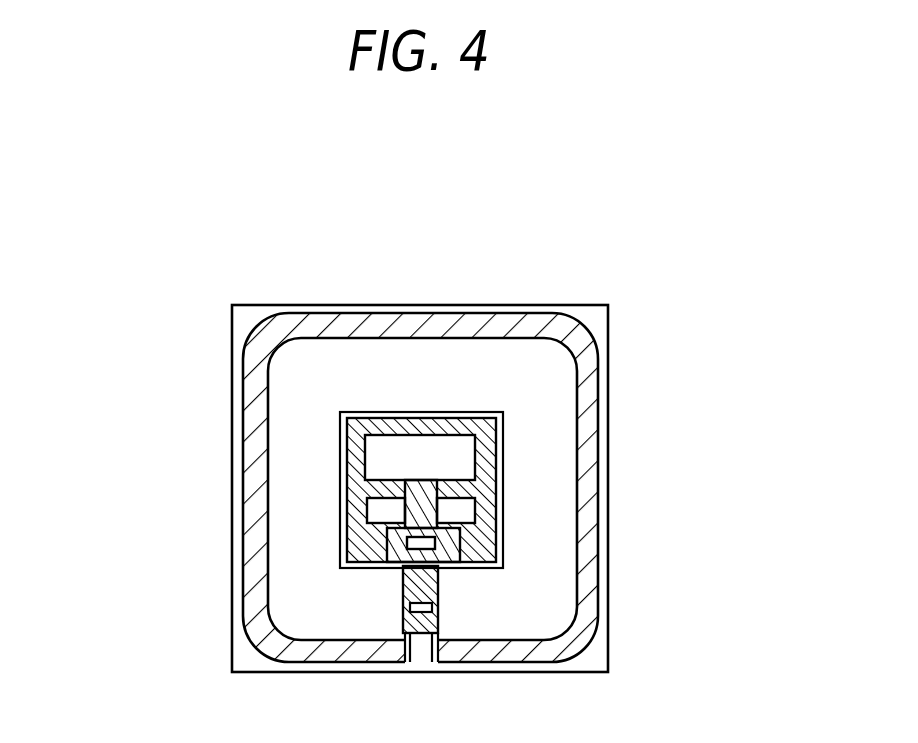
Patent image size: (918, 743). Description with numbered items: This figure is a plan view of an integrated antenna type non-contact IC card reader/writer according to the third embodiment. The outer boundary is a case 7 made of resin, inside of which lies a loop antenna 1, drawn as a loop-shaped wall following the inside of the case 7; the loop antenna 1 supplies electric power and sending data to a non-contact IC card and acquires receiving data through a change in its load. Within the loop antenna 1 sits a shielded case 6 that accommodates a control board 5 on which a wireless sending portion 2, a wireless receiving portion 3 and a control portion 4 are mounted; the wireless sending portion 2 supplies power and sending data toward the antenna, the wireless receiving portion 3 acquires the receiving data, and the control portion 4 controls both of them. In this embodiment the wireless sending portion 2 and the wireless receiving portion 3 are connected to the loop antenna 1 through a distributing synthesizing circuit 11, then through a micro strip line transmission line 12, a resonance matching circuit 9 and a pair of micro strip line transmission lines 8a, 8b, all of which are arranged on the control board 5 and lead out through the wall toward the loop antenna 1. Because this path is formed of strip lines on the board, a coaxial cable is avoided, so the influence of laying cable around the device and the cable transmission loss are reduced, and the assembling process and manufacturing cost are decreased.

The loop antenna 1 is at (443, 337).
The wireless sending portion 2 is at (373, 512).
The wireless receiving portion 3 is at (460, 512).
The control portion 4 is at (405, 455).
The control board 5 is at (407, 422).
The shielded case 6 is at (503, 560).
The case 7 is at (243, 325).
The micro strip line transmission line 8a is at (438, 621).
The micro strip line transmission line 8b is at (410, 620).
The resonance matching circuit 9 is at (410, 607).
The distributing synthesizing circuit 11 is at (503, 517).
The micro strip line transmission line 12 is at (438, 577).